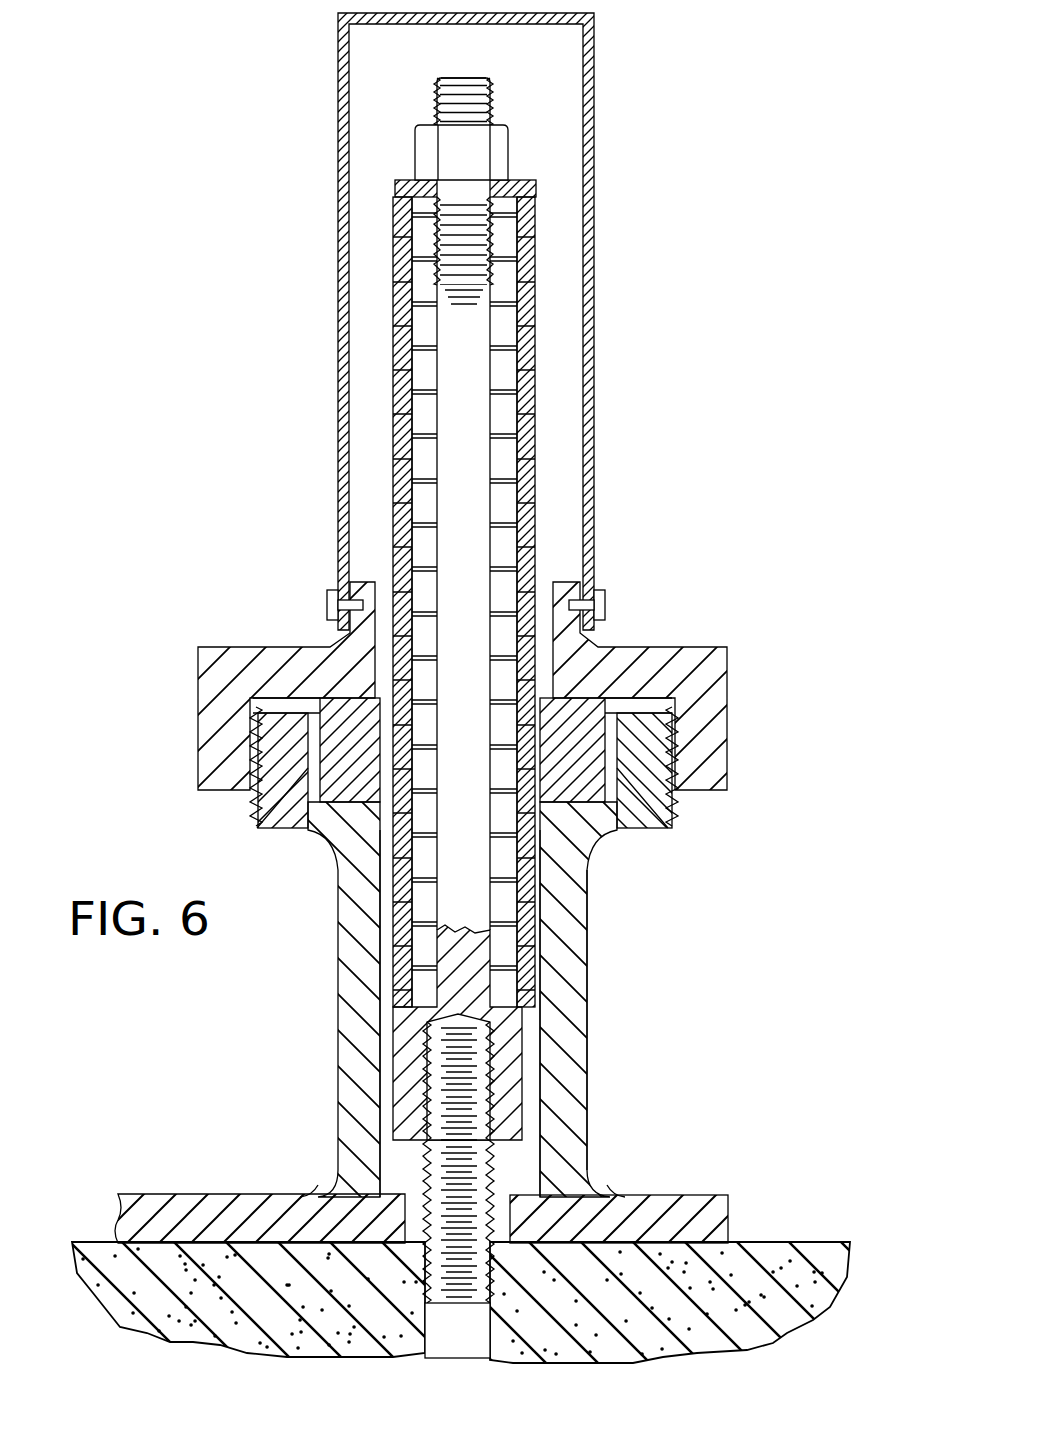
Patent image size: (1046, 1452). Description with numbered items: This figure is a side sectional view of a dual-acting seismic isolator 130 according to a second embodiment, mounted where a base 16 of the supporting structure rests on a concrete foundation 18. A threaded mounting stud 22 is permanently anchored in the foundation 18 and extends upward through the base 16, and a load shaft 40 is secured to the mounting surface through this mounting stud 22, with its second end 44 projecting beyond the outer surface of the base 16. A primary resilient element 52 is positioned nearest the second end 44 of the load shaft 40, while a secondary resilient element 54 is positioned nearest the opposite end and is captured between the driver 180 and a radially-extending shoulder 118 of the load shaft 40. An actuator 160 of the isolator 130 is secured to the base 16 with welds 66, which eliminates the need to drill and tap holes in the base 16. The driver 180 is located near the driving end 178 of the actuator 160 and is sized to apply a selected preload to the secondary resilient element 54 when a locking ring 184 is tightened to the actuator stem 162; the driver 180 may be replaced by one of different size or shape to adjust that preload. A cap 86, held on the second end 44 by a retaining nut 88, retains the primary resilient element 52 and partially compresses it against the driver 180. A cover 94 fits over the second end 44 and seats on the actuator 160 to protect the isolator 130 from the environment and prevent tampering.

The base 16 is at (722, 1217).
The concrete foundation 18 is at (800, 1272).
The mounting stud 22 is at (490, 1162).
The load shaft 40 is at (455, 385).
The second end 44 is at (510, 97).
The primary resilient element 52 is at (530, 397).
The secondary resilient element 54 is at (500, 918).
The weld 66 is at (322, 1190).
The cap 86 is at (530, 180).
The retaining nut 88 is at (428, 150).
The cover 94 is at (340, 178).
The shoulder 118 is at (405, 1000).
The dual-acting seismic isolator 130 is at (673, 202).
The actuator 160 is at (625, 930).
The actuator stem 162 is at (590, 1040).
The driving end 178 is at (238, 814).
The driver 180 is at (590, 752).
The locking ring 184 is at (710, 706).